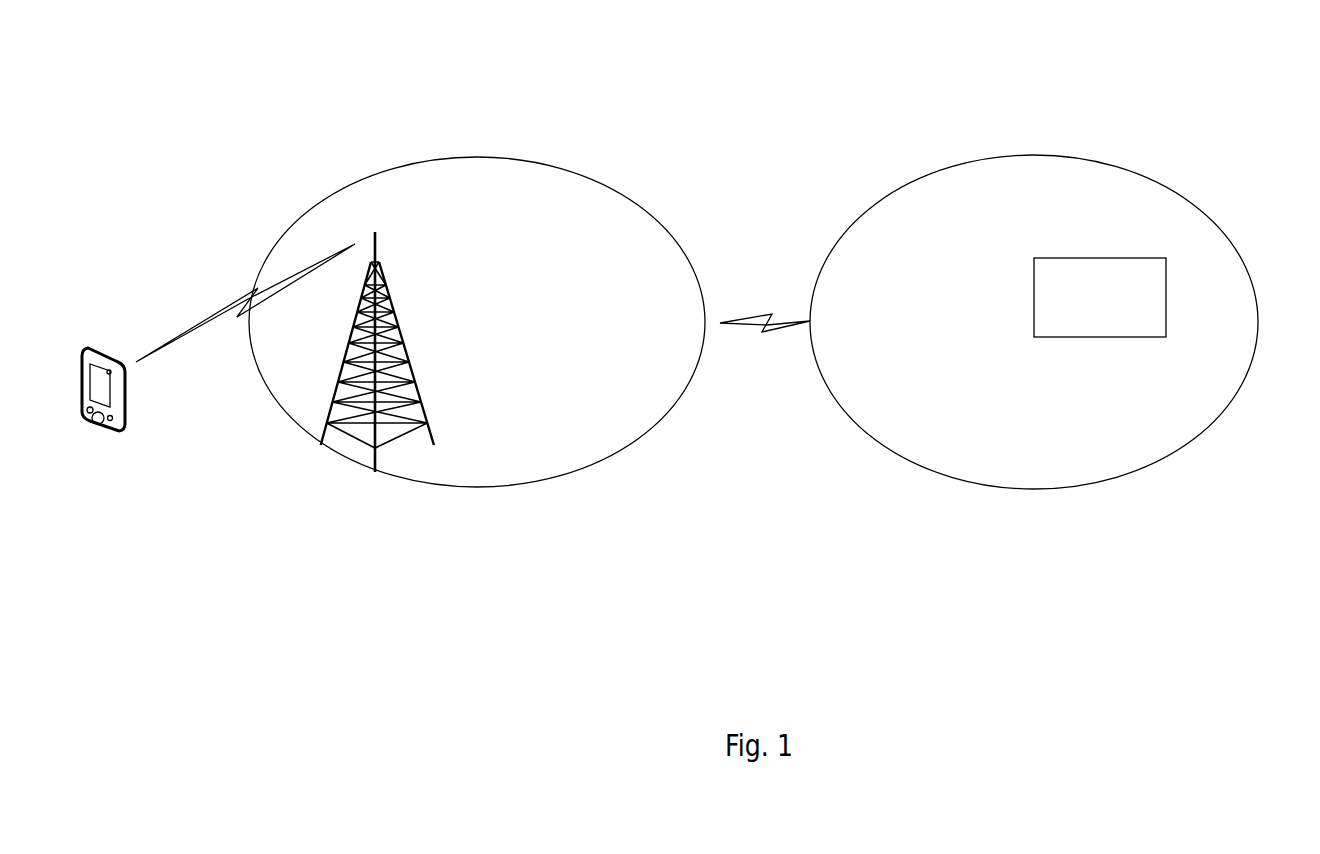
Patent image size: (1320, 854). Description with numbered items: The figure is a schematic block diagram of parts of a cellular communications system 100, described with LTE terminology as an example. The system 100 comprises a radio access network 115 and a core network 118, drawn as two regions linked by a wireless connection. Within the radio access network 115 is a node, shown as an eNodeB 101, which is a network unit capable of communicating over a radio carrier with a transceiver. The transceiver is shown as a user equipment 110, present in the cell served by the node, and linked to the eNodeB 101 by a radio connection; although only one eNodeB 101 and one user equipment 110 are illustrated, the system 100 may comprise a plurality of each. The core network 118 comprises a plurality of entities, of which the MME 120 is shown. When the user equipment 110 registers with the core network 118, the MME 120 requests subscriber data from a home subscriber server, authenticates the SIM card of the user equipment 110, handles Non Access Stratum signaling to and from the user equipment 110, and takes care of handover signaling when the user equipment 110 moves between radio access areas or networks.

The cellular communications system 100 is at (372, 109).
The eNodeB 101 is at (350, 437).
The user equipment 110 is at (112, 432).
The radio access network 115 is at (480, 152).
The core network 118 is at (948, 172).
The MME 120 is at (1163, 283).